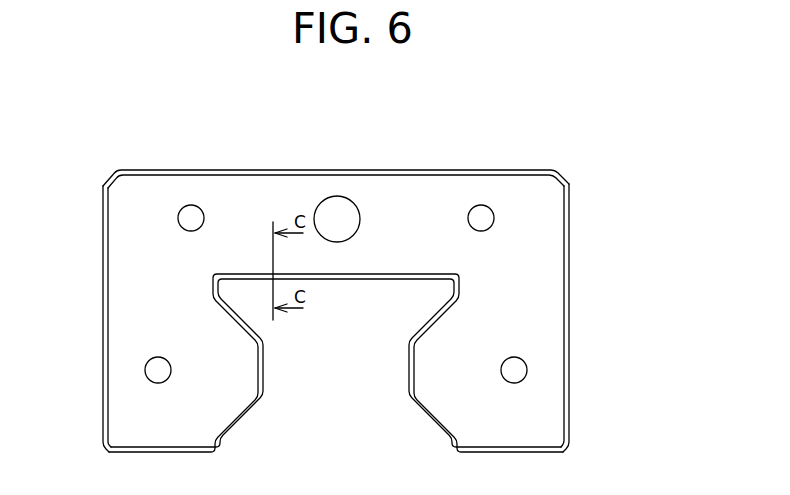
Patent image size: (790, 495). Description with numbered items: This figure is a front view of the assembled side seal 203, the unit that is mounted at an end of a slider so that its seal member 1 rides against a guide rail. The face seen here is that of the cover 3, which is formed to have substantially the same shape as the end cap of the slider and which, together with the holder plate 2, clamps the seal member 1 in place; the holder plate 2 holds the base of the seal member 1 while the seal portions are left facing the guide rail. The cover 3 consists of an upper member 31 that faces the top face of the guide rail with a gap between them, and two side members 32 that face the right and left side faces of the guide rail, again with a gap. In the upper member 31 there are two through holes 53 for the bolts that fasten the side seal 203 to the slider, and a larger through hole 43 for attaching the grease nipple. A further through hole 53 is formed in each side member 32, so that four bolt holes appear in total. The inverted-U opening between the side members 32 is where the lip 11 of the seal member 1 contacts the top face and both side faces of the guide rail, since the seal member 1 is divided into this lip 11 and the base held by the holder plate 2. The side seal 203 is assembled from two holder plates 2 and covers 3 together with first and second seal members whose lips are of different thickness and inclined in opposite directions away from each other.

The side seal 203 is at (136, 159).
The holder plate 2 is at (545, 168).
The cover 3 is at (566, 201).
The upper member 31 is at (412, 210).
The side member 32 is at (137, 303).
The seal member 1 is at (336, 363).
The lip 11 is at (258, 372).
The through hole 43 is at (350, 200).
The through hole 53 is at (192, 205).